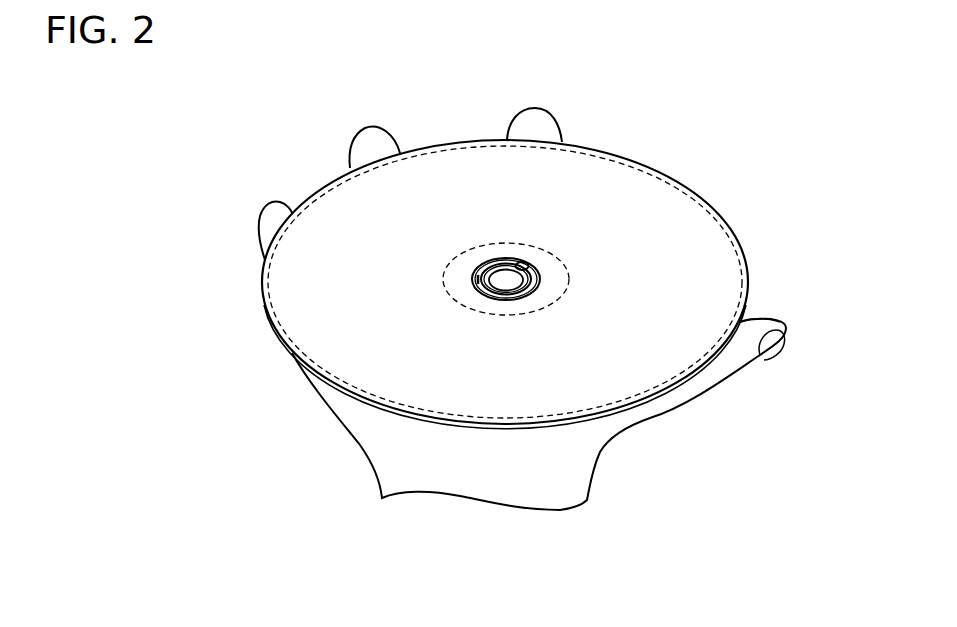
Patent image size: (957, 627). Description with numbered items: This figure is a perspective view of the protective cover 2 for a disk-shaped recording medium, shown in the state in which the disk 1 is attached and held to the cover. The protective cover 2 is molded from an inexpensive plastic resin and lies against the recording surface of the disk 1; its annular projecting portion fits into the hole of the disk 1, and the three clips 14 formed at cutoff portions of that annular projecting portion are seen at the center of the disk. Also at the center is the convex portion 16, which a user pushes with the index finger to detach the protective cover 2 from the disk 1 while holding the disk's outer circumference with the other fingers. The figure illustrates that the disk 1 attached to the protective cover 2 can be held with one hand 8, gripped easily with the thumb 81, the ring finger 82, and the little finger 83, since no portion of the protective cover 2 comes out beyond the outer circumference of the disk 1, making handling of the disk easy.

The disk 1 is at (680, 210).
The protective cover 2 is at (742, 282).
The hand 8 is at (657, 412).
The clips 14 is at (521, 262).
The convex portion 16 is at (503, 277).
The thumb 81 is at (762, 330).
The ring finger 82 is at (368, 148).
The little finger 83 is at (270, 220).